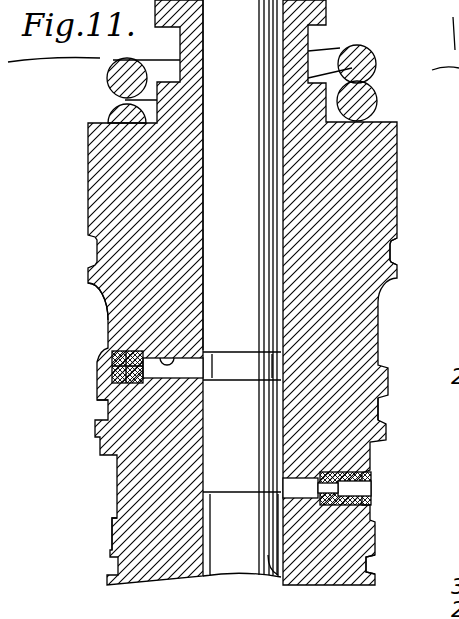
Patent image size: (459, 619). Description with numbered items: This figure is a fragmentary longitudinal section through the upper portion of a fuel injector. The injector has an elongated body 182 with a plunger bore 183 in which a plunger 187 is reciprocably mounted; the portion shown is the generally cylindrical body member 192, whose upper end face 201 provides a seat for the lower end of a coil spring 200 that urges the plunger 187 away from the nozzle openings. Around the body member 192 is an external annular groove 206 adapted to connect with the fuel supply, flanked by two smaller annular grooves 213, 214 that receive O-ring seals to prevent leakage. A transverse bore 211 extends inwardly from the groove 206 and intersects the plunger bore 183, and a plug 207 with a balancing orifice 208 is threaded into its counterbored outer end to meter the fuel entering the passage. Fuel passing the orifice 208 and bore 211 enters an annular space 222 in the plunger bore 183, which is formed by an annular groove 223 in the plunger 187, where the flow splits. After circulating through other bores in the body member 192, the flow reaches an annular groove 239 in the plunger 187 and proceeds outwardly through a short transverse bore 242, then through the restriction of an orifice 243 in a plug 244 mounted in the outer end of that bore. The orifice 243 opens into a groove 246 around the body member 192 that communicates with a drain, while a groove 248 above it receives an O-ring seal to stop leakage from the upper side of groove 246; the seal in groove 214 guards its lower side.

The body 182 is at (394, 381).
The plunger bore 183 is at (206, 262).
The plunger 187 is at (200, 472).
The body member 192 is at (123, 532).
The coil spring 200 is at (107, 80).
The upper end face 201 is at (383, 121).
The external annular groove 206 is at (117, 492).
The plug 207 is at (344, 468).
The balancing orifice 208 is at (373, 490).
The transverse bore 211 is at (262, 492).
The annular groove 213 is at (378, 567).
The annular groove 214 is at (380, 410).
The annular space 222 is at (207, 566).
The annular groove 223 is at (277, 560).
The annular groove 239 is at (270, 382).
The transverse bore 242 is at (188, 358).
The orifice 243 is at (107, 399).
The plug 244 is at (115, 352).
The groove 246 is at (107, 316).
The groove 248 is at (392, 258).